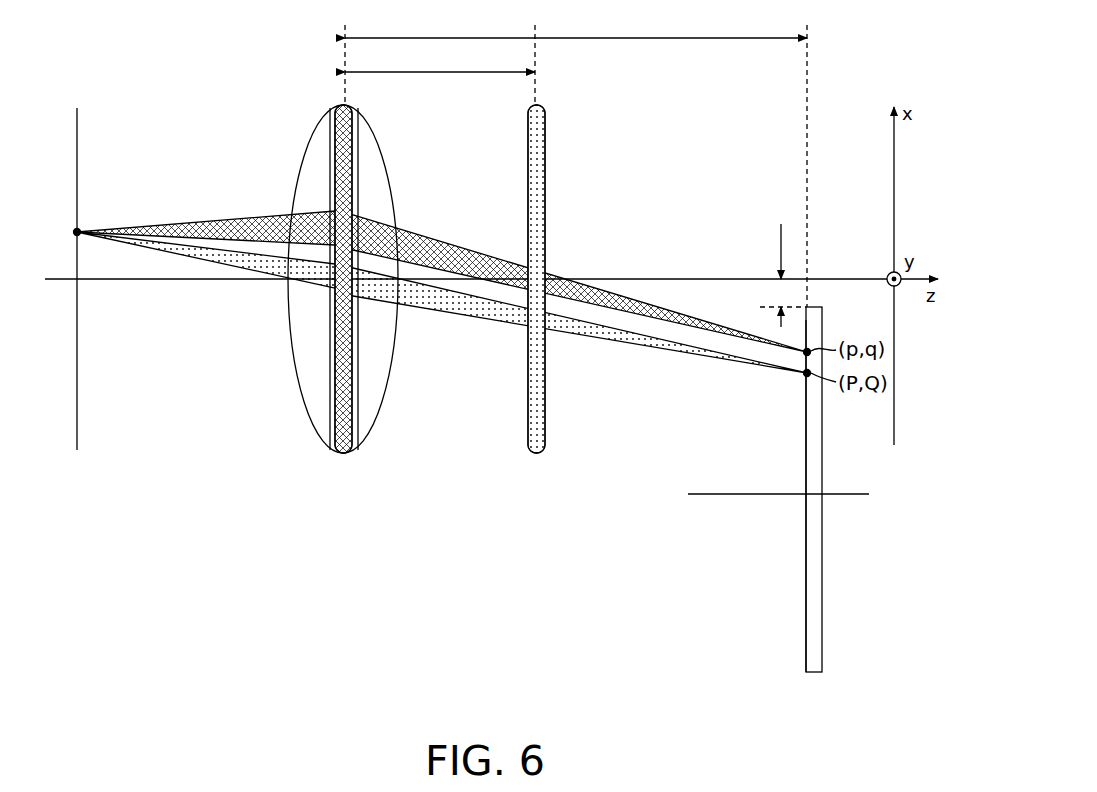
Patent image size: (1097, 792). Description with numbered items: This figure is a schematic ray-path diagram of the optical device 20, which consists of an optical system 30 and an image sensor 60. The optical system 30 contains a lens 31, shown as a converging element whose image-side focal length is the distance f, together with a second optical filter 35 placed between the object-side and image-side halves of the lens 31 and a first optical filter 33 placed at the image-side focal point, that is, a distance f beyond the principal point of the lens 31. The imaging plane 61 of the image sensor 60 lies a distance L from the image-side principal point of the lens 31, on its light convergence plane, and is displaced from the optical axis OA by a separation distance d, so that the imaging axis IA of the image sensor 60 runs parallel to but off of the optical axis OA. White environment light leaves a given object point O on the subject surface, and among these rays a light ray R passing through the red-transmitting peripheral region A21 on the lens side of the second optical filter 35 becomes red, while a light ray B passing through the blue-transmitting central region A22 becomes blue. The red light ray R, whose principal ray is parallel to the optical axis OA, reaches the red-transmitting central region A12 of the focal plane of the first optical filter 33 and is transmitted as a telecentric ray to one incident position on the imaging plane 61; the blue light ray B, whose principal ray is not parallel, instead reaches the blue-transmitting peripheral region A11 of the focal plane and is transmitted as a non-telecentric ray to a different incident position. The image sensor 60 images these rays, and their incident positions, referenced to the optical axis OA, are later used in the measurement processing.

The optical device 20 is at (537, 420).
The optical system 30 is at (431, 354).
The lens 31 is at (366, 145).
The first optical filter 33 is at (536, 455).
The second optical filter 35 is at (345, 455).
The image sensor 60 is at (787, 521).
The imaging plane 61 is at (806, 668).
The peripheral region of the focal plane A11 is at (545, 140).
The central region of the focal plane A12 is at (543, 276).
The peripheral region on the lens side A21 is at (353, 193).
The central region on the lens side A22 is at (353, 290).
The light ray R is at (192, 222).
The light ray B is at (180, 256).
The object point O is at (77, 231).
The optical axis OA is at (58, 282).
The imaging axis IA is at (862, 495).
The distance L is at (576, 25).
The distance f is at (440, 59).
The separation distance d is at (772, 275).